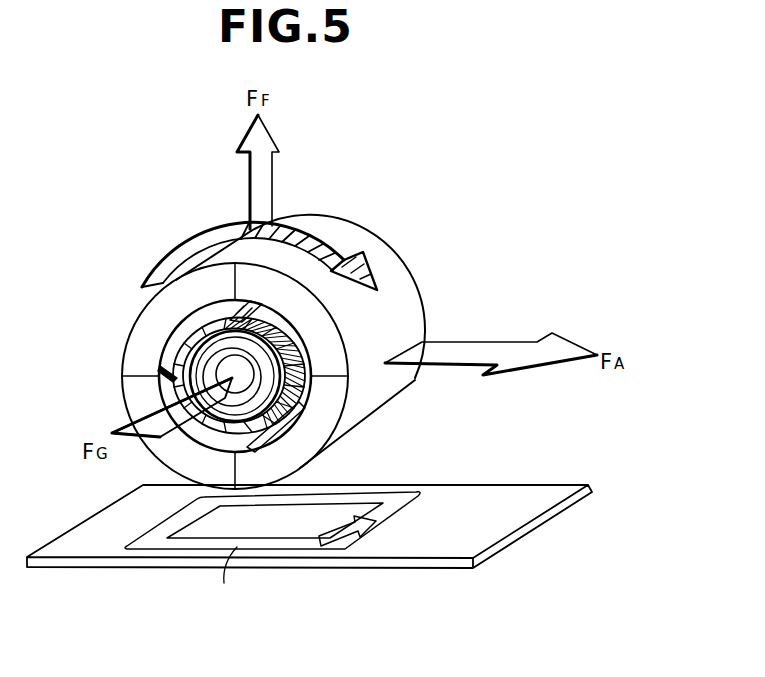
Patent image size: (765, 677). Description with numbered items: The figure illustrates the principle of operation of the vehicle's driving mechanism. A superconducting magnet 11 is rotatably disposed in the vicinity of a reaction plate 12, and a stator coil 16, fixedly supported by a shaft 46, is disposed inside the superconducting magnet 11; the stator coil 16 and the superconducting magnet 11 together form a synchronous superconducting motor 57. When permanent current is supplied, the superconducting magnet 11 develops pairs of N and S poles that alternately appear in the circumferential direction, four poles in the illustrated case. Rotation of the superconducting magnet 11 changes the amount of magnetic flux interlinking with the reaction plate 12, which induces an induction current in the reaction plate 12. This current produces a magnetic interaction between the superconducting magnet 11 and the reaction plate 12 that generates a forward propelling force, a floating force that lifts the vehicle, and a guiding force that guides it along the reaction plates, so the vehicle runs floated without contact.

The superconducting magnet 11 is at (388, 255).
The reaction plate 12 is at (510, 498).
The stator coil 16 is at (280, 405).
The shaft 46 is at (170, 372).
The synchronous superconducting motor 57 is at (437, 302).